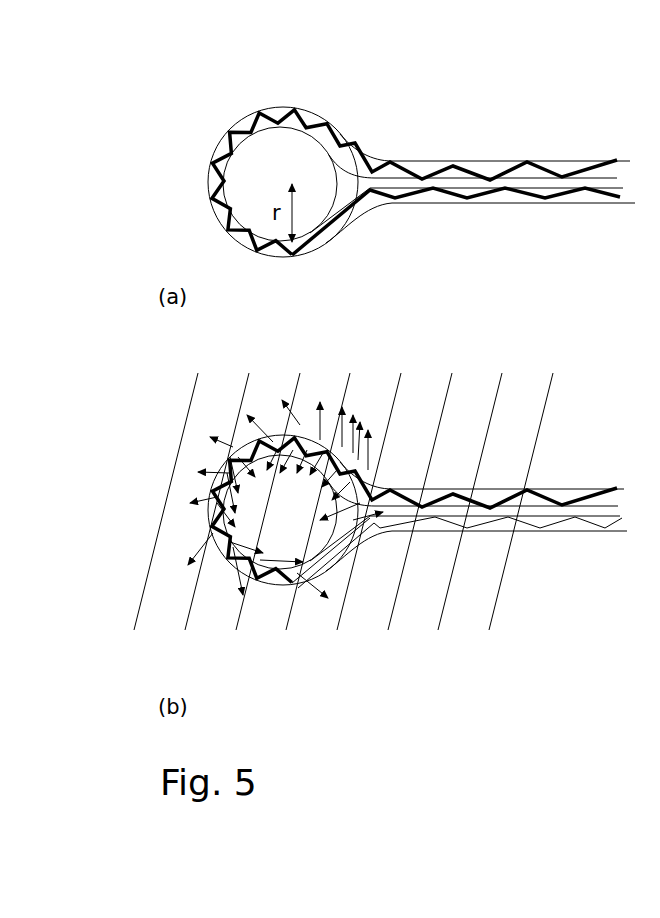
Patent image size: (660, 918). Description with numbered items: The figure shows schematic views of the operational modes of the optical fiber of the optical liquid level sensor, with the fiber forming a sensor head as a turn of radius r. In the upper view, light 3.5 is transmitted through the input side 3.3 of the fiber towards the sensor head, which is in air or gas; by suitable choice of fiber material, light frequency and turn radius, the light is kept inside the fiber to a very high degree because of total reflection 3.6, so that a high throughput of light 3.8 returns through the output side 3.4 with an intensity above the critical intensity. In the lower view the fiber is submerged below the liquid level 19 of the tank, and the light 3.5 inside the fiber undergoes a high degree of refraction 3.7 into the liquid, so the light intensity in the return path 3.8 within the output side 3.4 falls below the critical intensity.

The input side 3.3 is at (414, 336).
The output side 3.4 is at (457, 394).
The light 3.5 is at (493, 298).
The total reflection 3.6 is at (283, 145).
The refraction 3.7 is at (285, 537).
The light throughput / return path 3.8 is at (479, 388).
The liquid level 19 is at (374, 516).